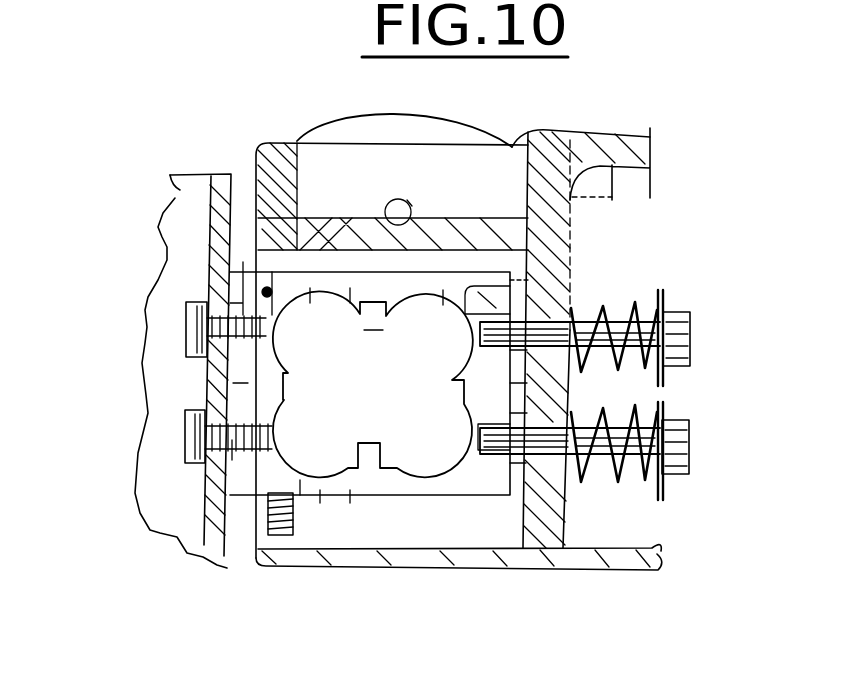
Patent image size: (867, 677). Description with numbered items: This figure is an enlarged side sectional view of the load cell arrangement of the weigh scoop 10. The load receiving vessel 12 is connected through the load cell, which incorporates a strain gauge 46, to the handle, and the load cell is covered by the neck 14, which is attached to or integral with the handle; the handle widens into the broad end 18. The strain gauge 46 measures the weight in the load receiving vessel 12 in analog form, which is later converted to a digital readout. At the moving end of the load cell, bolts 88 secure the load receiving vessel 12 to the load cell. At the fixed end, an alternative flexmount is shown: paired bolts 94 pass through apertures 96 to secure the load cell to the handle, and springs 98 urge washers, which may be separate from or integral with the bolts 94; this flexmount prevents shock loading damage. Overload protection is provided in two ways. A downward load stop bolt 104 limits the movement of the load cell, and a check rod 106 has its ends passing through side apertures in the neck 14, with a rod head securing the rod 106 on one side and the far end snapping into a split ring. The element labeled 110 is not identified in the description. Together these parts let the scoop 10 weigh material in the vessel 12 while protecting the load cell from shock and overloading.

The weigh scoop 10 is at (463, 610).
The load receiving vessel 12 is at (168, 485).
The neck 14 is at (280, 140).
The broad end 18 is at (600, 137).
The strain gauge 46 is at (460, 317).
The bolts 88 is at (183, 323).
The paired bolts 94 is at (700, 338).
The apertures 96 is at (543, 311).
The springs 98 is at (643, 300).
The downward load stop bolt 104 is at (275, 520).
The check rod 106 is at (260, 288).
The retaining washers 110 is at (665, 300).